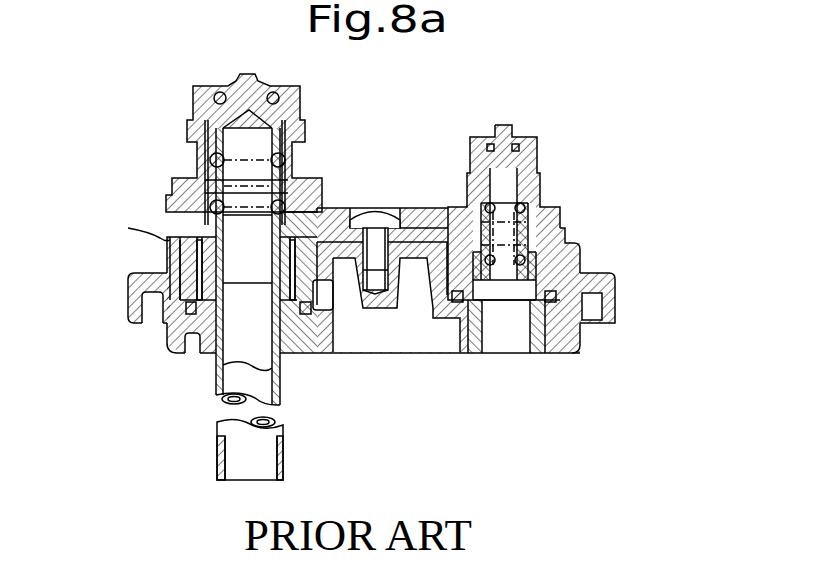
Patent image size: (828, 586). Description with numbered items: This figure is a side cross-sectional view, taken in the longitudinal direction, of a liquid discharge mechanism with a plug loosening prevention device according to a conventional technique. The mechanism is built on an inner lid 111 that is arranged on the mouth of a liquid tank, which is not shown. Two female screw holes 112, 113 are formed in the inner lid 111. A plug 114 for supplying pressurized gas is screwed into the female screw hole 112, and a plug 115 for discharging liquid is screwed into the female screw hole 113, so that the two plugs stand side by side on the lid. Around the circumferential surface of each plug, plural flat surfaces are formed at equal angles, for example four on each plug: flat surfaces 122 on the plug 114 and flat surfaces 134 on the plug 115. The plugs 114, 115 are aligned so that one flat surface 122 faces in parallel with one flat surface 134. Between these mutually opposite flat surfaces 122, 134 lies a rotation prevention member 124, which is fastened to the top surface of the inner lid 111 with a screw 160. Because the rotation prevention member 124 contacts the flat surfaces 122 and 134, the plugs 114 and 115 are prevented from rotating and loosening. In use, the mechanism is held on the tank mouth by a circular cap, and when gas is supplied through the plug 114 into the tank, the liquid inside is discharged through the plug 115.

The inner lid 111 is at (615, 283).
The female screw hole 112 is at (562, 254).
The female screw hole 113 is at (170, 258).
The plug for supplying pressurized gas 114 is at (560, 210).
The plug for discharging liquid 115 is at (170, 214).
The flat surface 122 is at (437, 207).
The rotation prevention member 124 is at (407, 203).
The flat surface 134 is at (329, 200).
The screw 160 is at (371, 207).